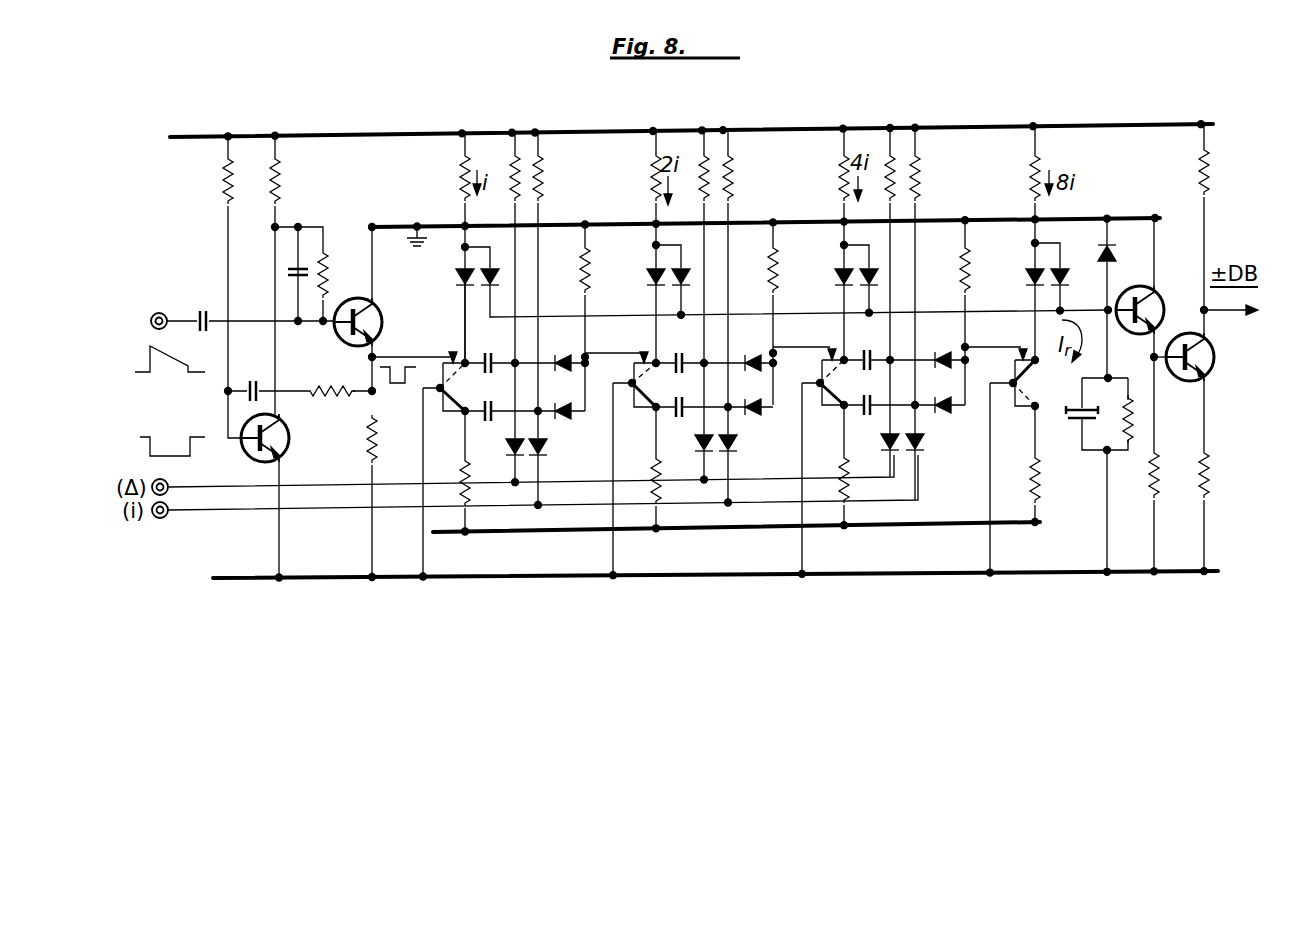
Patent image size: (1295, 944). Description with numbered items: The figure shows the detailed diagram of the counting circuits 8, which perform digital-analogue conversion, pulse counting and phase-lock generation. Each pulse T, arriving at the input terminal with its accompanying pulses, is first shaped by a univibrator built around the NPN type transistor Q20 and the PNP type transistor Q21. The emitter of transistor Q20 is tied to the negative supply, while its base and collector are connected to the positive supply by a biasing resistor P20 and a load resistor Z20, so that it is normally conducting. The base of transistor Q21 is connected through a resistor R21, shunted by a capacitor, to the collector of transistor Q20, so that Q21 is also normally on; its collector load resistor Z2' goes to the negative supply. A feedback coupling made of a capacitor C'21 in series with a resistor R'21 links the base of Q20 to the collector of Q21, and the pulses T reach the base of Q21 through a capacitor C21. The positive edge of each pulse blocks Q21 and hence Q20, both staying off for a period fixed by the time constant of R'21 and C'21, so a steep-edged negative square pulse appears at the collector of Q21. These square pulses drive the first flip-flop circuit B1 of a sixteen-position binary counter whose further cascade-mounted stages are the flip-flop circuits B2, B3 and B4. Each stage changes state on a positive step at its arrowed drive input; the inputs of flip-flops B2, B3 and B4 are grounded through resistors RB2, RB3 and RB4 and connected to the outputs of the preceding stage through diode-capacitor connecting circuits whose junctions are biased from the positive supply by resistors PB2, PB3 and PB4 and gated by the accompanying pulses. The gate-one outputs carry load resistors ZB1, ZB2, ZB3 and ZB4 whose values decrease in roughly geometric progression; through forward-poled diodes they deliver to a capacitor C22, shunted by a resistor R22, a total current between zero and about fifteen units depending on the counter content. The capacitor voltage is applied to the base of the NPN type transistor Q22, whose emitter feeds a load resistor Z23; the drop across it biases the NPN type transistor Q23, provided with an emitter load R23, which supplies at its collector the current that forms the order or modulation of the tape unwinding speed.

The counting circuits 8 is at (514, 124).
The pulse T is at (230, 322).
The capacitor C21 is at (193, 305).
The biasing resistor P20 is at (226, 176).
The load resistor Z20 is at (282, 186).
The resistor R21 is at (330, 282).
The PNP type transistor Q21 is at (422, 317).
The capacitor C'21 is at (252, 377).
The resistor R'21 is at (322, 373).
The NPN type transistor Q20 is at (244, 441).
The load resistor Z2' is at (355, 498).
The load resistor ZB1 is at (450, 173).
The biasing resistor PB2 is at (522, 178).
The load resistor ZB2 is at (640, 180).
The biasing resistor PB3 is at (712, 170).
The load resistor ZB3 is at (834, 170).
The biasing resistor PB4 is at (898, 168).
The load resistor ZB4 is at (1025, 164).
The resistor RB2 is at (592, 280).
The resistor RB3 is at (780, 280).
The resistor RB4 is at (972, 278).
The first flip-flop circuit B1 is at (386, 612).
The flip-flop circuit B2 is at (606, 612).
The flip-flop circuit B3 is at (777, 620).
The flip-flop circuit B4 is at (965, 618).
The capacitor C22 is at (1070, 420).
The resistor R22 is at (1134, 418).
The NPN type transistor Q22 is at (1200, 276).
The NPN type transistor Q23 is at (1252, 416).
The load resistor Z23 is at (1160, 484).
The emitter load resistor R23 is at (1210, 484).